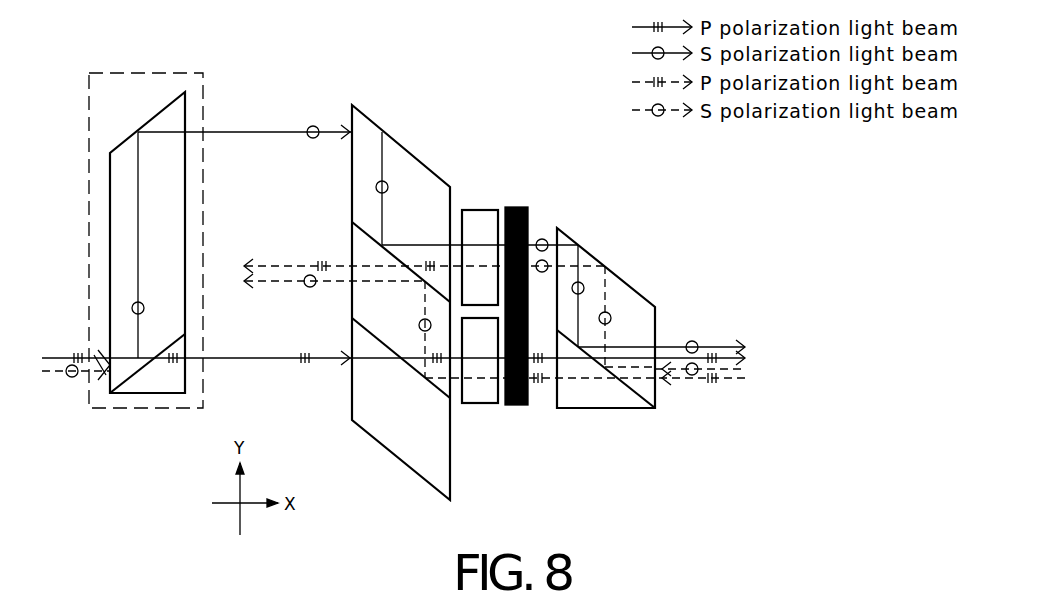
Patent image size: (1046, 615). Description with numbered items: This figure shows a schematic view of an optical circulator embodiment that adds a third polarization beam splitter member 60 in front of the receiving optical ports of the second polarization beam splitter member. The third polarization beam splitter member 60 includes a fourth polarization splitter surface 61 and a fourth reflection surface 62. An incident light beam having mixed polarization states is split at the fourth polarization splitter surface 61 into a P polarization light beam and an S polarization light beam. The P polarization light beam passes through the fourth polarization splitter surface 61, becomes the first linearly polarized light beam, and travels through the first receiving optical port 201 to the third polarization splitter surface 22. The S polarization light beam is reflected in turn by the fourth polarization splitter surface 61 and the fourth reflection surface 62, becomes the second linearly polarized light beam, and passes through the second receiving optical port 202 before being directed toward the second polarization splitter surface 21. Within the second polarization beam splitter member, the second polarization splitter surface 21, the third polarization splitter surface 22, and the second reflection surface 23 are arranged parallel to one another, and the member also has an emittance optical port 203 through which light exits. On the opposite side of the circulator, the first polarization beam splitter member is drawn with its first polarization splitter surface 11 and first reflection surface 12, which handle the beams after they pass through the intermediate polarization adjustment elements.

The third polarization beam splitter member 60 is at (185, 73).
The fourth reflection surface 62 is at (123, 141).
The fourth polarization splitter surface 61 is at (132, 380).
The second reflection surface 23 is at (425, 164).
The second polarization splitter surface 21 is at (373, 239).
The third polarization splitter surface 22 is at (373, 334).
The first receiving optical port 201 is at (352, 185).
The emittance optical port 203 is at (352, 302).
The second receiving optical port 202 is at (352, 395).
The first reflection surface 12 is at (640, 295).
The first polarization splitter surface 11 is at (630, 388).